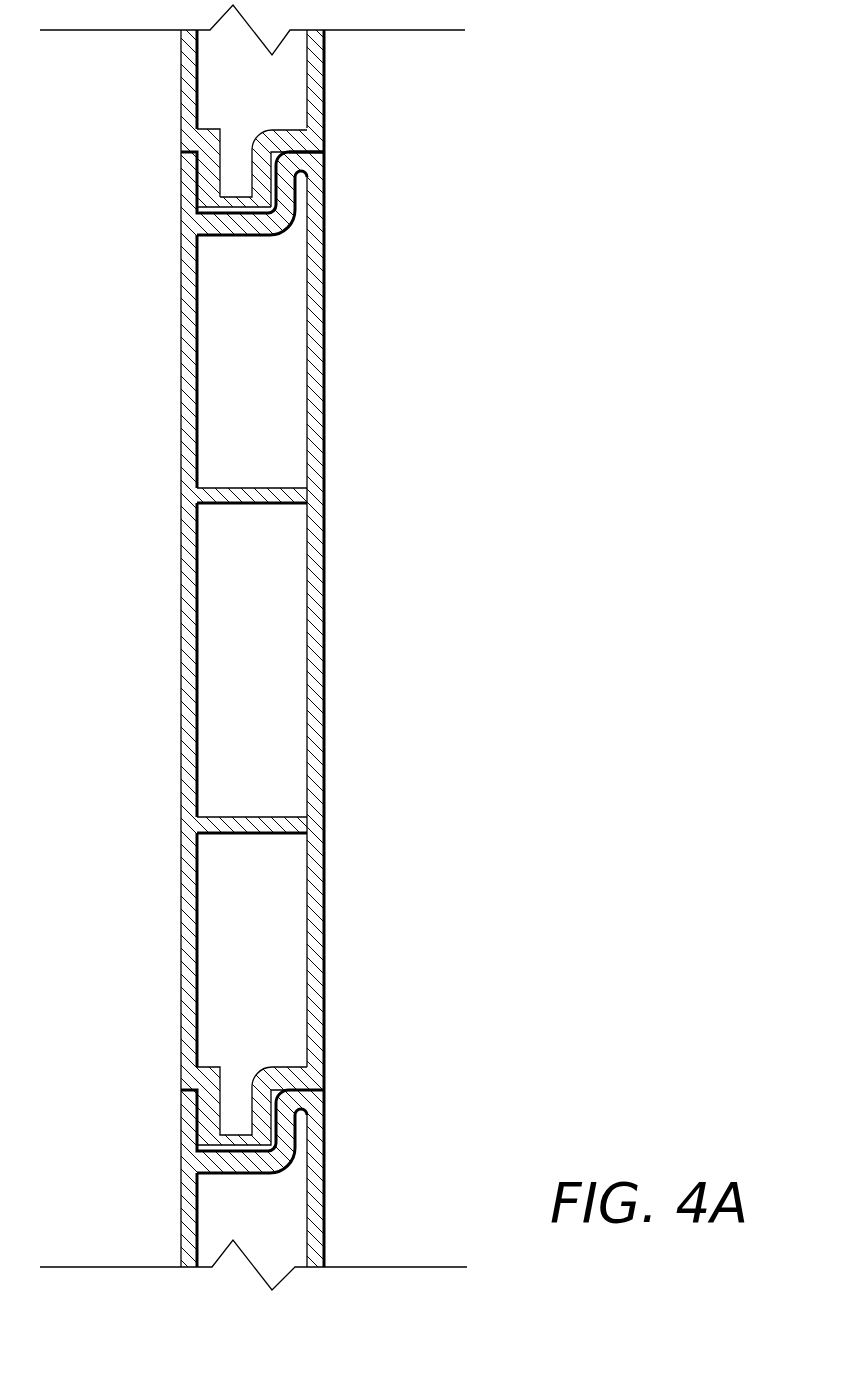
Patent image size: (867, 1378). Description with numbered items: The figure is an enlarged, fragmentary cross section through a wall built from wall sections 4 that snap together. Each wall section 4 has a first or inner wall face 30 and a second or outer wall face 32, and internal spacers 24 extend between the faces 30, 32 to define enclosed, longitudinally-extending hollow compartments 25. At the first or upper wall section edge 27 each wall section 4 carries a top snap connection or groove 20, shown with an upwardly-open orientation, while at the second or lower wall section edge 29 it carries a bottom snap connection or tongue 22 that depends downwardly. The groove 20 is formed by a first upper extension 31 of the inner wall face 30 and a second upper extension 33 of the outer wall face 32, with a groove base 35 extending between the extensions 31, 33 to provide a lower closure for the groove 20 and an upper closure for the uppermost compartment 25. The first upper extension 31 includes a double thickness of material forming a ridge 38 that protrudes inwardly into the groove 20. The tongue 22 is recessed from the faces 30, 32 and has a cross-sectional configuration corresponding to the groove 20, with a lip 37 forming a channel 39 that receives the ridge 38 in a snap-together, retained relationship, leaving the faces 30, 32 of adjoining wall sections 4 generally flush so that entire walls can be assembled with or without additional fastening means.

The wall section 4 is at (325, 55).
The top snap connection or groove 20 is at (275, 238).
The bottom snap connection or tongue 22 is at (233, 1130).
The internal spacer 24 is at (277, 817).
The hollow compartment 25 is at (279, 432).
The first or upper wall section edge 27 is at (323, 149).
The second or lower wall section edge 29 is at (322, 1088).
The first or inner wall face 30 is at (326, 463).
The first upper extension 31 is at (322, 173).
The second or outer wall face 32 is at (179, 465).
The second upper extension 33 is at (190, 174).
The groove base 35 is at (235, 213).
The lip 37 is at (293, 1176).
The ridge 38 is at (253, 178).
The channel 39 is at (284, 156).